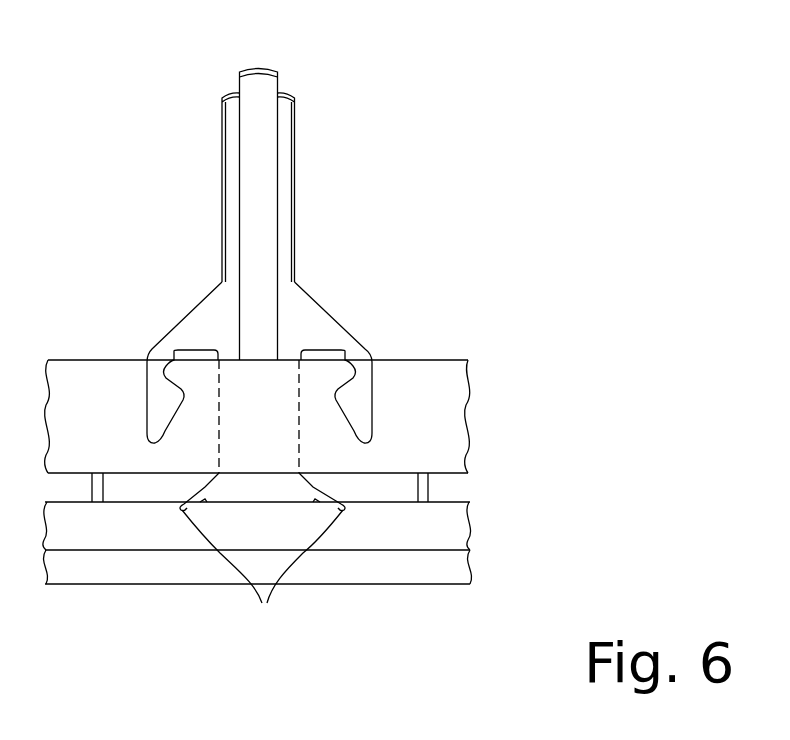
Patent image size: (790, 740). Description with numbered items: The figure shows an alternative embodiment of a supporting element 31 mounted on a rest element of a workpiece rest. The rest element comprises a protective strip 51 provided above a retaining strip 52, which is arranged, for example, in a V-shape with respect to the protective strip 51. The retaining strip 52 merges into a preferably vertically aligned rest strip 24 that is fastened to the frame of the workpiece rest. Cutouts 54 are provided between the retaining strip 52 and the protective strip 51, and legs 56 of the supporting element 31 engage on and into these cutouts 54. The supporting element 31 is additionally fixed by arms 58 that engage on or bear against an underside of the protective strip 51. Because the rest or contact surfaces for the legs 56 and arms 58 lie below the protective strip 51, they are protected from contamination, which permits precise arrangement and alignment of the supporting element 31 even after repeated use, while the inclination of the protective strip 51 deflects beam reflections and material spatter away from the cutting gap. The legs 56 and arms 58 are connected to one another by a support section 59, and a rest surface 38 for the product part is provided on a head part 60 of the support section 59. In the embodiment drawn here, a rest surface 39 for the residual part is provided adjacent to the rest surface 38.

The rest surface 38 is at (273, 75).
The rest surface 39 is at (292, 99).
The head part 60 is at (302, 114).
The supporting element 31 is at (325, 230).
The support section 59 is at (308, 285).
The arms 58 is at (146, 398).
The protective strip 51 is at (452, 397).
The cutouts 54 is at (427, 483).
The retaining strip 52 is at (457, 529).
The rest strip 24 is at (455, 565).
The legs 56 is at (262, 554).